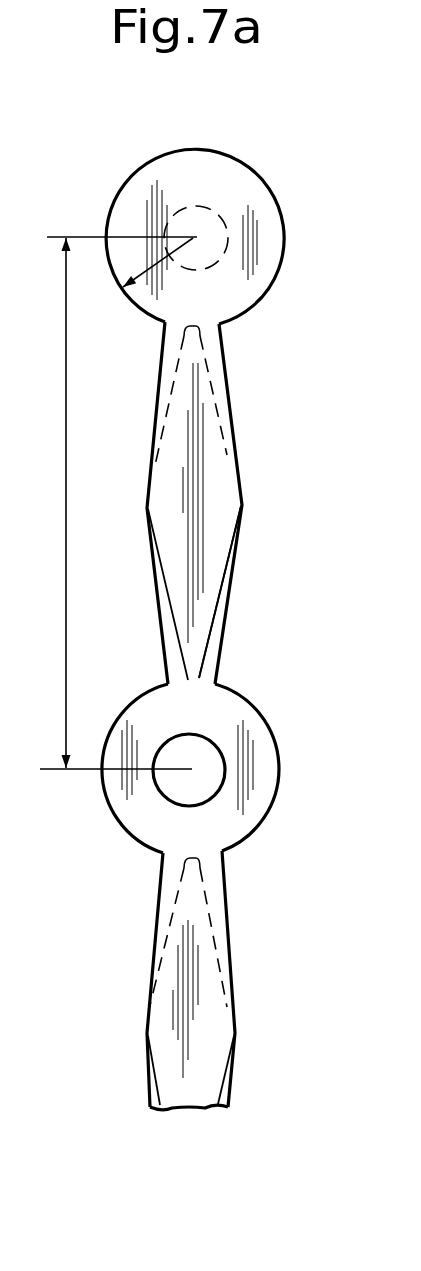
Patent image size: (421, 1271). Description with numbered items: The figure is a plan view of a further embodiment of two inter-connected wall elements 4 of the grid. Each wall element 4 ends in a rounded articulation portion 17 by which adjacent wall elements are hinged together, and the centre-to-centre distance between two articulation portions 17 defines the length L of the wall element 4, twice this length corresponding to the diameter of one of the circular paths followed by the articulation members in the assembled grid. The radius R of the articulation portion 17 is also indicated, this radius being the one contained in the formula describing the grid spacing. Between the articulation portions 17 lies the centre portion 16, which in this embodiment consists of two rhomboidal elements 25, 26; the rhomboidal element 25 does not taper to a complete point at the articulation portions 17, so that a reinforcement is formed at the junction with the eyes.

The articulation portion 17 is at (245, 196).
The wall element 4 is at (246, 503).
The centre portion 16 is at (195, 433).
The rhomboidal element 25 is at (197, 572).
The rhomboidal element 26 is at (210, 662).
The radius R is at (193, 238).
The length L is at (66, 437).